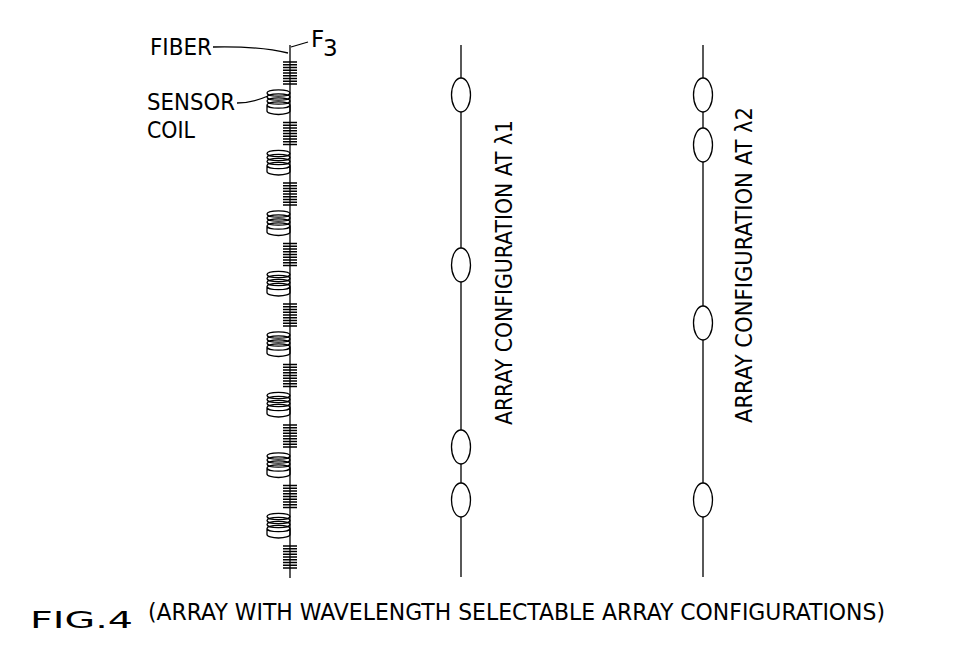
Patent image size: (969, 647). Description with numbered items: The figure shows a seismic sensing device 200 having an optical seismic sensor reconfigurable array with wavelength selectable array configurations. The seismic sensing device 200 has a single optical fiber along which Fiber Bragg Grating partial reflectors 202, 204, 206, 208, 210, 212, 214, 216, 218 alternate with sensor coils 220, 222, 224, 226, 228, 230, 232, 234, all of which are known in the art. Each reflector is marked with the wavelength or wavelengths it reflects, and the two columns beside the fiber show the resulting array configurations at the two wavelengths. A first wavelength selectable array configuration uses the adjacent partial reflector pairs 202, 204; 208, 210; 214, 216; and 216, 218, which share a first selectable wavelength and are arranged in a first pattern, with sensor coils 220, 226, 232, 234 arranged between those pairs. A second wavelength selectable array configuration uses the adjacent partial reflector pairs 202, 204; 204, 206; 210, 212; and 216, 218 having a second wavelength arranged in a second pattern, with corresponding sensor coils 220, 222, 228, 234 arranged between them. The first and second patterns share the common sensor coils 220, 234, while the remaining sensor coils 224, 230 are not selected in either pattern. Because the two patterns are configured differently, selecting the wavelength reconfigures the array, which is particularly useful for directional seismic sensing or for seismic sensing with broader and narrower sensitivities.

The seismic sensing device 200 is at (100, 147).
The Fiber Bragg Grating partial reflector 202 is at (284, 74).
The Fiber Bragg Grating partial reflector 204 is at (284, 134).
The Fiber Bragg Grating partial reflector 206 is at (284, 195).
The Fiber Bragg Grating partial reflector 208 is at (284, 256).
The Fiber Bragg Grating partial reflector 210 is at (284, 316).
The Fiber Bragg Grating partial reflector 212 is at (284, 376).
The Fiber Bragg Grating partial reflector 214 is at (284, 437).
The Fiber Bragg Grating partial reflector 216 is at (284, 498).
The Fiber Bragg Grating partial reflector 218 is at (284, 558).
The sensor coil 220 is at (291, 97).
The sensor coil 222 is at (291, 158).
The sensor coil 224 is at (291, 218).
The sensor coil 226 is at (291, 278).
The sensor coil 228 is at (291, 339).
The sensor coil 230 is at (291, 400).
The sensor coil 232 is at (291, 460).
The sensor coil 234 is at (291, 520).